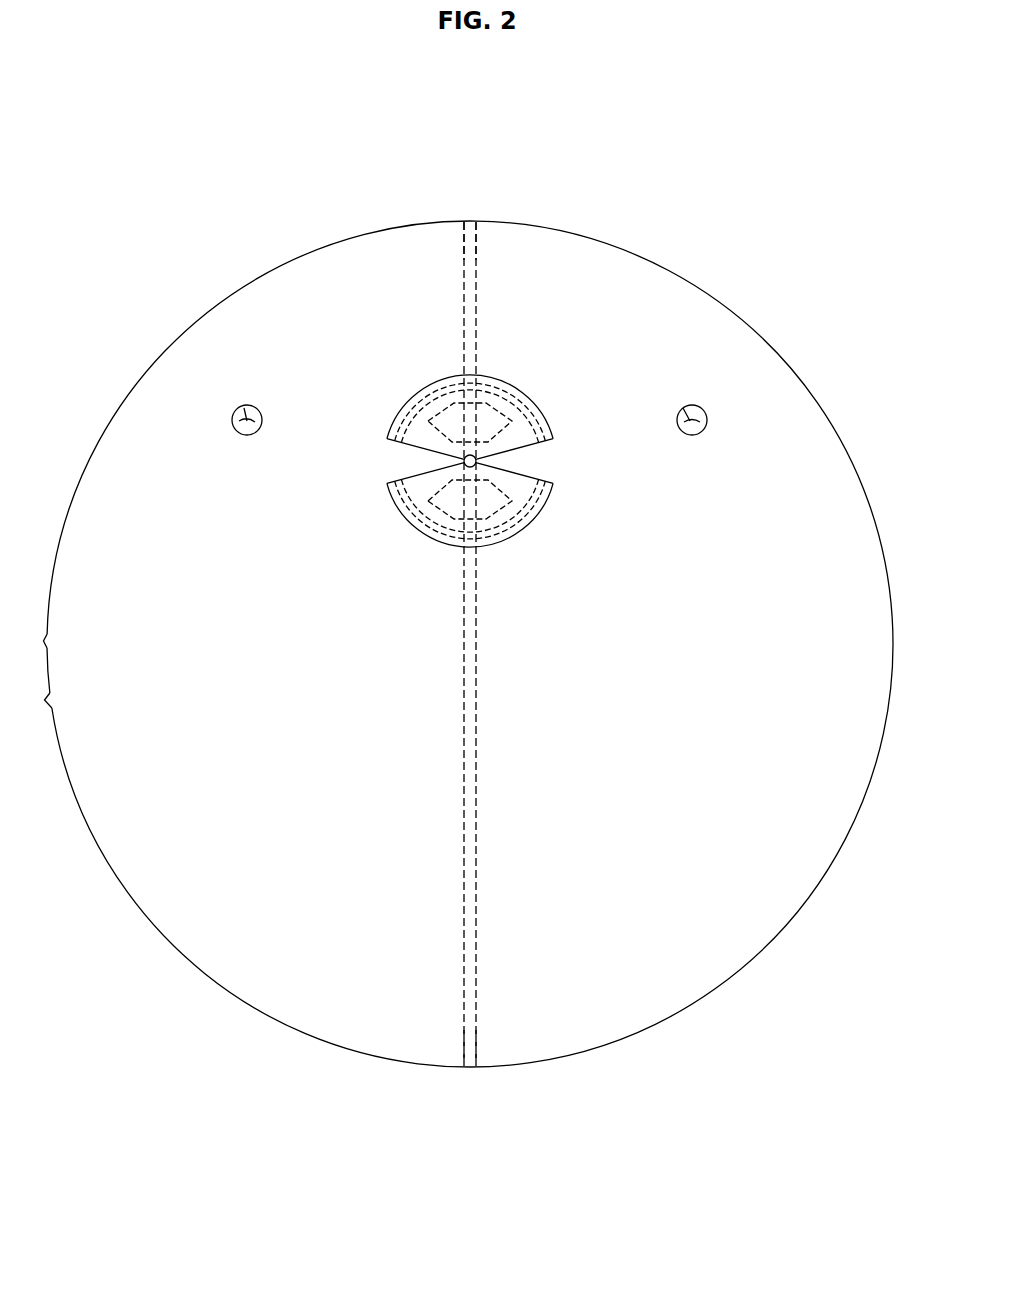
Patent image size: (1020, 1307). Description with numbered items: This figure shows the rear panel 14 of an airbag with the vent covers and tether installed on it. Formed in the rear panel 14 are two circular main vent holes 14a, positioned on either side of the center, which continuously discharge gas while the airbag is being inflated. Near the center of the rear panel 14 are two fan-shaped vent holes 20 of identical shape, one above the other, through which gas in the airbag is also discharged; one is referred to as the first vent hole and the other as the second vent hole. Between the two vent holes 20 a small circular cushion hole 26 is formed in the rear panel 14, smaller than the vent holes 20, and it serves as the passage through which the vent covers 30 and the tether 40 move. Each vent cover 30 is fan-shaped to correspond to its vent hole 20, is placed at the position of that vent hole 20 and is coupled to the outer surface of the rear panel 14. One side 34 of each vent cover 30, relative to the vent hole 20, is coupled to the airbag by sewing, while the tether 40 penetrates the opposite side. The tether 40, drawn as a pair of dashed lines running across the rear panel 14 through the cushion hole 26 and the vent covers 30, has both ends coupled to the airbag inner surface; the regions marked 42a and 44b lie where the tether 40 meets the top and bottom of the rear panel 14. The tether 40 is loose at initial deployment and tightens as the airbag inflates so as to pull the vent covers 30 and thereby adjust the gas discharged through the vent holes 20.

The rear panel 14 is at (375, 255).
The main vent hole 14a is at (237, 405).
The vent hole 20 is at (489, 421).
The cushion hole 26 is at (463, 462).
The vent cover 30 is at (520, 432).
The one side of the vent cover 34 is at (550, 420).
The tether 40 is at (450, 685).
The first end portion 42a is at (477, 222).
The second end portion 44b is at (477, 1067).